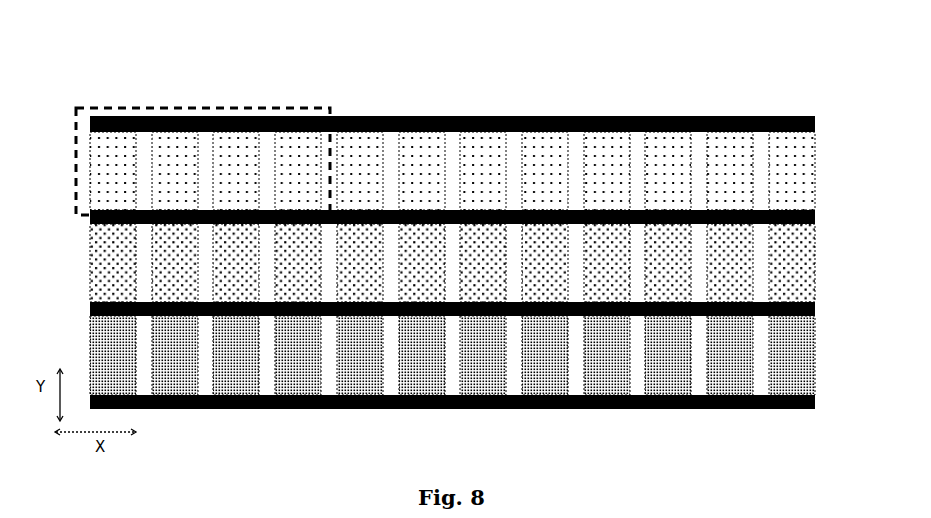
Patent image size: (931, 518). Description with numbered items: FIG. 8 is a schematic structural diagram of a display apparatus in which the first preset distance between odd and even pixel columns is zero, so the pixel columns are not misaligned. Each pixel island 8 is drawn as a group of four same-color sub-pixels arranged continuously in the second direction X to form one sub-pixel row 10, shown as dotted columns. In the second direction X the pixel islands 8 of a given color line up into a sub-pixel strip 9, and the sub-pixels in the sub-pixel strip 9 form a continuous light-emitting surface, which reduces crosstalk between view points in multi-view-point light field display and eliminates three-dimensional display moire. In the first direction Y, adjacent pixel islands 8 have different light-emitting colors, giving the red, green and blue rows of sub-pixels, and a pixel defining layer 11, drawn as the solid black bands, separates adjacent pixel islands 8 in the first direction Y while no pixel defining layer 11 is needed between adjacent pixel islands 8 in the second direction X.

The pixel island 8 is at (222, 100).
The sub-pixel strip 9 is at (82, 222).
The sub-pixel row 10 is at (70, 163).
The pixel defining layer 11 is at (727, 401).